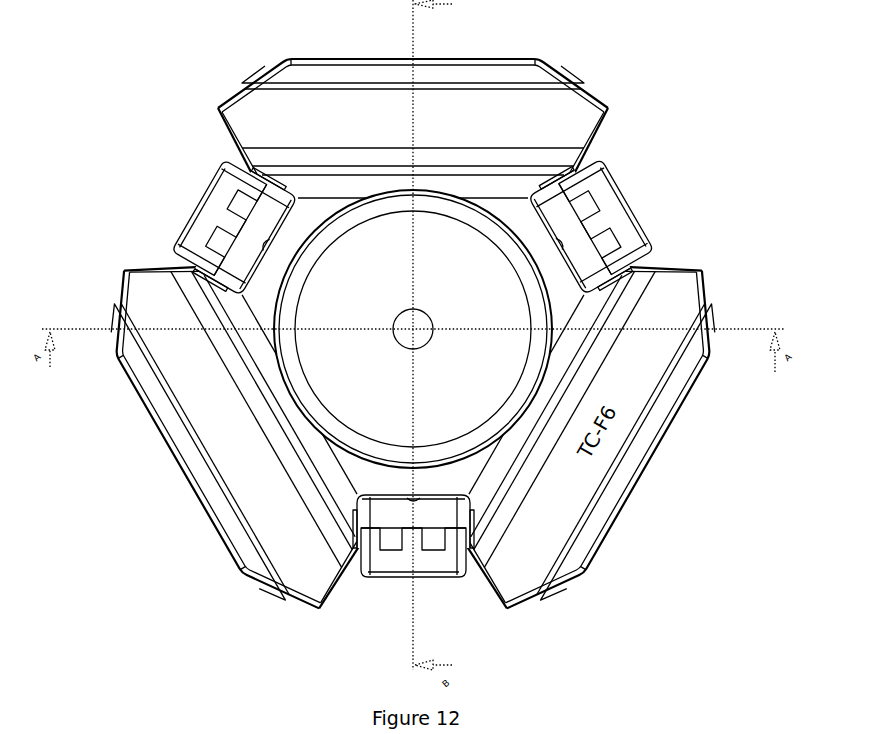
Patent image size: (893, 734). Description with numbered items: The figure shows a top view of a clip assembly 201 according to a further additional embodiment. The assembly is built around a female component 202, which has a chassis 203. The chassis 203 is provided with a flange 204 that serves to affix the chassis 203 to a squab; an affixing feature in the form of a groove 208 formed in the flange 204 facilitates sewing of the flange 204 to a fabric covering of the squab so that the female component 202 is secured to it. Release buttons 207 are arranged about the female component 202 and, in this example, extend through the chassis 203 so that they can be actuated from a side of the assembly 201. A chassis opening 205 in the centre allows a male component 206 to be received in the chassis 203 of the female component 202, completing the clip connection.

The clip assembly 201 is at (603, 128).
The female component 202 is at (515, 213).
The chassis 203 is at (560, 288).
The flange 204 is at (628, 363).
The chassis opening 205 is at (487, 332).
The male component 206 is at (458, 358).
The release buttons 207 is at (585, 208).
The rim flange 208 is at (607, 477).